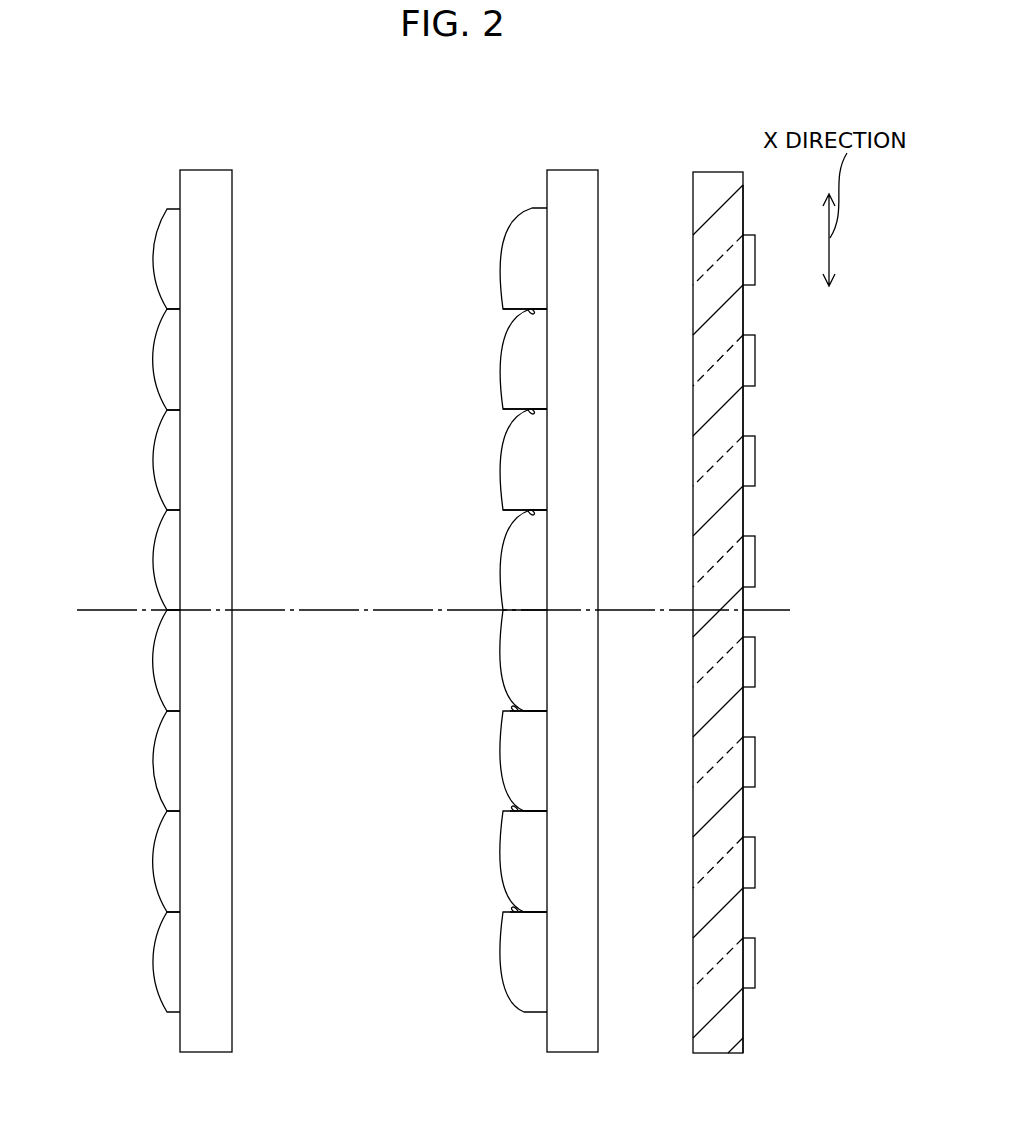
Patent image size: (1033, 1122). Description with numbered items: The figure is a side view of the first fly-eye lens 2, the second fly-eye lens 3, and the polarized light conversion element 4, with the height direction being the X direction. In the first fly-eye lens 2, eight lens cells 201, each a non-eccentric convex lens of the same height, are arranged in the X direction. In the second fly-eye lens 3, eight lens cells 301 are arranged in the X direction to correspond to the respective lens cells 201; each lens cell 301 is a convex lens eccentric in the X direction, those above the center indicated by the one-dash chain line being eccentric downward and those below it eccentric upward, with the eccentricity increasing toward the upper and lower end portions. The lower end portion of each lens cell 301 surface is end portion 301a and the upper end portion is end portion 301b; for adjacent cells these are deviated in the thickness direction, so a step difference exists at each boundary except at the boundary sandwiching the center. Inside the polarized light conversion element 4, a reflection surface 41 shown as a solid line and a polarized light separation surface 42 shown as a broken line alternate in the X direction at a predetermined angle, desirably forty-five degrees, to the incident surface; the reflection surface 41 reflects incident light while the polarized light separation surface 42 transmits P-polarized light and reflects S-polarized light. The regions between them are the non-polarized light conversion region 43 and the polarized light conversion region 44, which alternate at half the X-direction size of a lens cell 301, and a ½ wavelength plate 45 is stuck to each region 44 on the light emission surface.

The first fly-eye lens 2 is at (208, 178).
The lens cell 201 is at (158, 258).
The second fly-eye lens 3 is at (574, 178).
The lens cell 301 is at (505, 270).
The end portion 301a is at (527, 308).
The end portion 301b is at (527, 312).
The polarized light conversion element 4 is at (718, 178).
The reflection surface 41 is at (710, 216).
The polarized light separation surface 42 is at (710, 262).
The non-polarized light conversion region 43 is at (744, 206).
The polarized light conversion region 44 is at (704, 292).
The ½ wavelength plate 45 is at (756, 256).